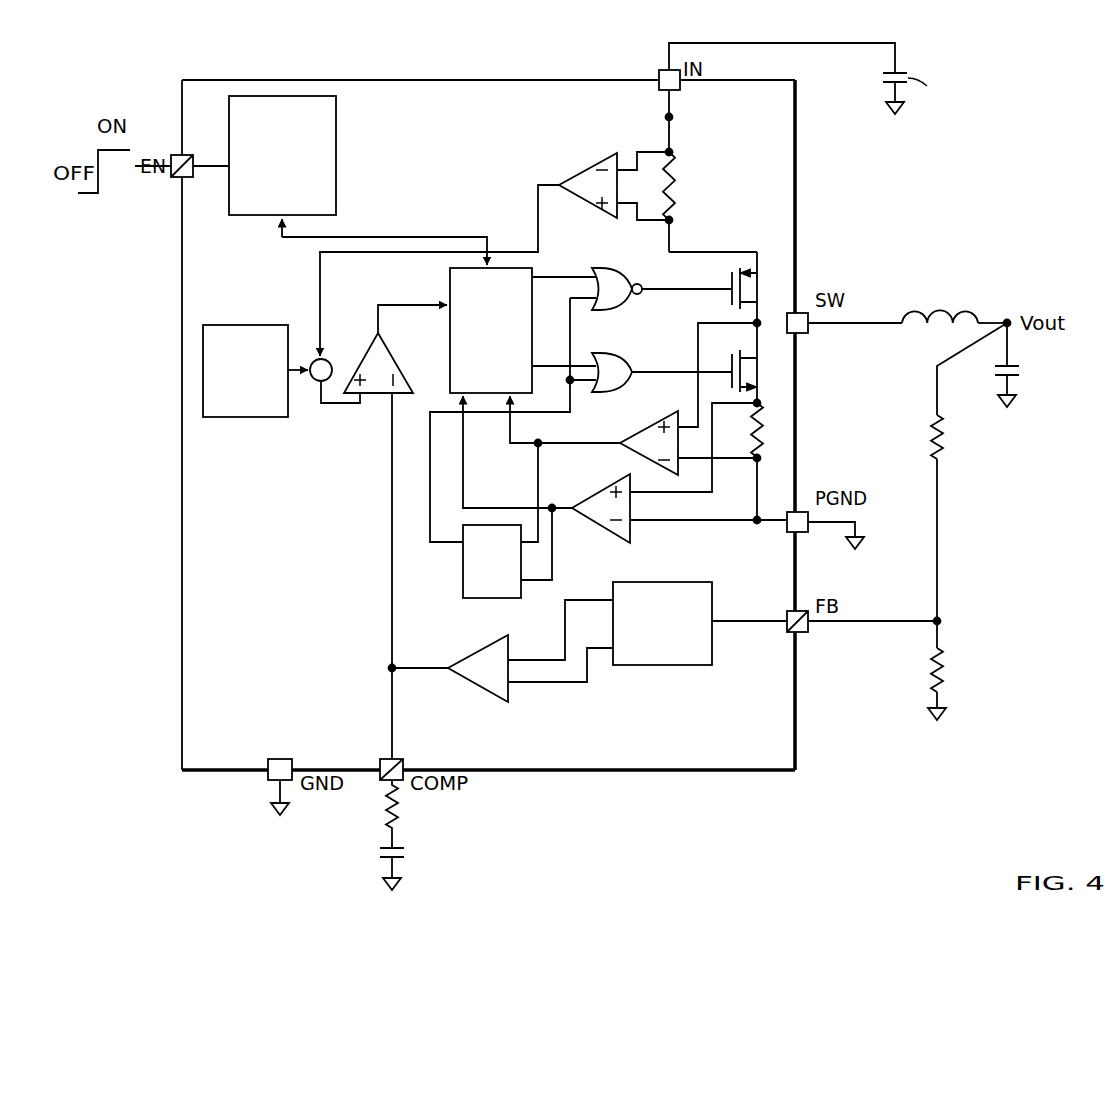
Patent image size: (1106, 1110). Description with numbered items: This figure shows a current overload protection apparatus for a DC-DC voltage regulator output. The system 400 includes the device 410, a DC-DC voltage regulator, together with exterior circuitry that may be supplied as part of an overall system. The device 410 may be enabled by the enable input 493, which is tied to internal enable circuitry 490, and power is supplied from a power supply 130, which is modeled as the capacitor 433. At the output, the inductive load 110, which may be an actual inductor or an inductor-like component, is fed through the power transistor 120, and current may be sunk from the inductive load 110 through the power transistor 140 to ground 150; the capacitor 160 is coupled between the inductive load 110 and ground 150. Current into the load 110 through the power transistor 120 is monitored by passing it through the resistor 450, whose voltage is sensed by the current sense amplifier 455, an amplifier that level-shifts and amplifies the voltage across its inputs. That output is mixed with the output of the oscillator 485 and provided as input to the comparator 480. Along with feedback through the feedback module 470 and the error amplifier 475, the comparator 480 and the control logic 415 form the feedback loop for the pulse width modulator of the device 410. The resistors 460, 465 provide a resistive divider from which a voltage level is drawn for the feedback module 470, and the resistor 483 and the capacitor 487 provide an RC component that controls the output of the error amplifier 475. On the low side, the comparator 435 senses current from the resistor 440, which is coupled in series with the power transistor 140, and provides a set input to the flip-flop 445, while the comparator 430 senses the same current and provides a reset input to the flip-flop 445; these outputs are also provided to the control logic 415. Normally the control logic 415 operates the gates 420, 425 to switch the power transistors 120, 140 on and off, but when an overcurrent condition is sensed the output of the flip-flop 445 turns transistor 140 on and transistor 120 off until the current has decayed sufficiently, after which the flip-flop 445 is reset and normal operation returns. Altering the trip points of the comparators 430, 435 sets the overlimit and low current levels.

The inductive load 110 is at (953, 297).
The power transistor 120 is at (748, 294).
The power supply 130 is at (814, 44).
The power transistor 140 is at (755, 365).
The ground 150 is at (1022, 400).
The capacitor 160 is at (1022, 370).
The system 400 is at (720, 802).
The device 410 is at (245, 736).
The control logic 415 is at (503, 380).
The gate 420 is at (613, 270).
The gate 425 is at (611, 354).
The comparator 430 is at (632, 454).
The capacitor 433 is at (985, 89).
The comparator 435 is at (594, 525).
The resistor 440 is at (783, 414).
The flip-flop 445 is at (470, 600).
The resistor 450 is at (675, 178).
The current sense amplifier 455 is at (567, 178).
The resistor 460 is at (944, 441).
The resistor 465 is at (944, 672).
The feedback module 470 is at (680, 653).
The error amplifier 475 is at (509, 702).
The comparator 480 is at (386, 346).
The resistor 483 is at (404, 808).
The oscillator 485 is at (260, 405).
The capacitor 487 is at (409, 849).
The enable circuitry 490 is at (326, 202).
The enable input 493 is at (178, 154).